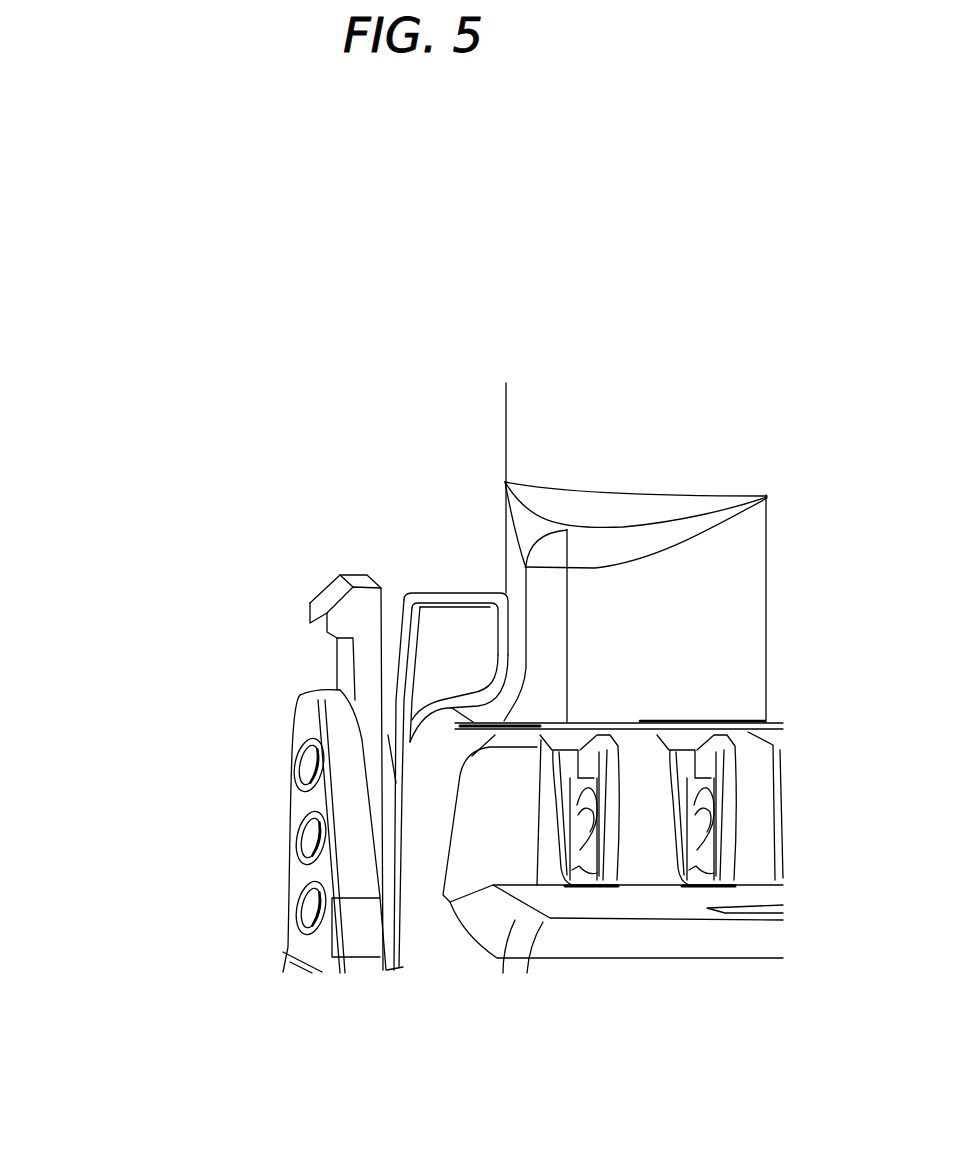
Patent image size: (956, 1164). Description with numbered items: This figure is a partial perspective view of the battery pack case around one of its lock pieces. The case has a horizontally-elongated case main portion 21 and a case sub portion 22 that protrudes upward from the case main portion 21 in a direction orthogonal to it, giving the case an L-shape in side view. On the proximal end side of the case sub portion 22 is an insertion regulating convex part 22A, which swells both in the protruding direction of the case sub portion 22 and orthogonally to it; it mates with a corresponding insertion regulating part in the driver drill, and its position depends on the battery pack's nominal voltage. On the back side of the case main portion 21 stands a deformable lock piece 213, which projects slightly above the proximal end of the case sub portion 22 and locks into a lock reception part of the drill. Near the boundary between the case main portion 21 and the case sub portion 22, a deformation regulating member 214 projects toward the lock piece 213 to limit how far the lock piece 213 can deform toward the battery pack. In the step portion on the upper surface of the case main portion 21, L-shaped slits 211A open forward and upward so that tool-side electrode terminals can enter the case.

The case sub portion 22 is at (527, 420).
The insertion regulating convex part 22A is at (550, 508).
The deformation regulating member 214 is at (447, 623).
The lock piece 213 is at (358, 620).
The case main portion 21 is at (418, 947).
The slit 211A is at (693, 850).